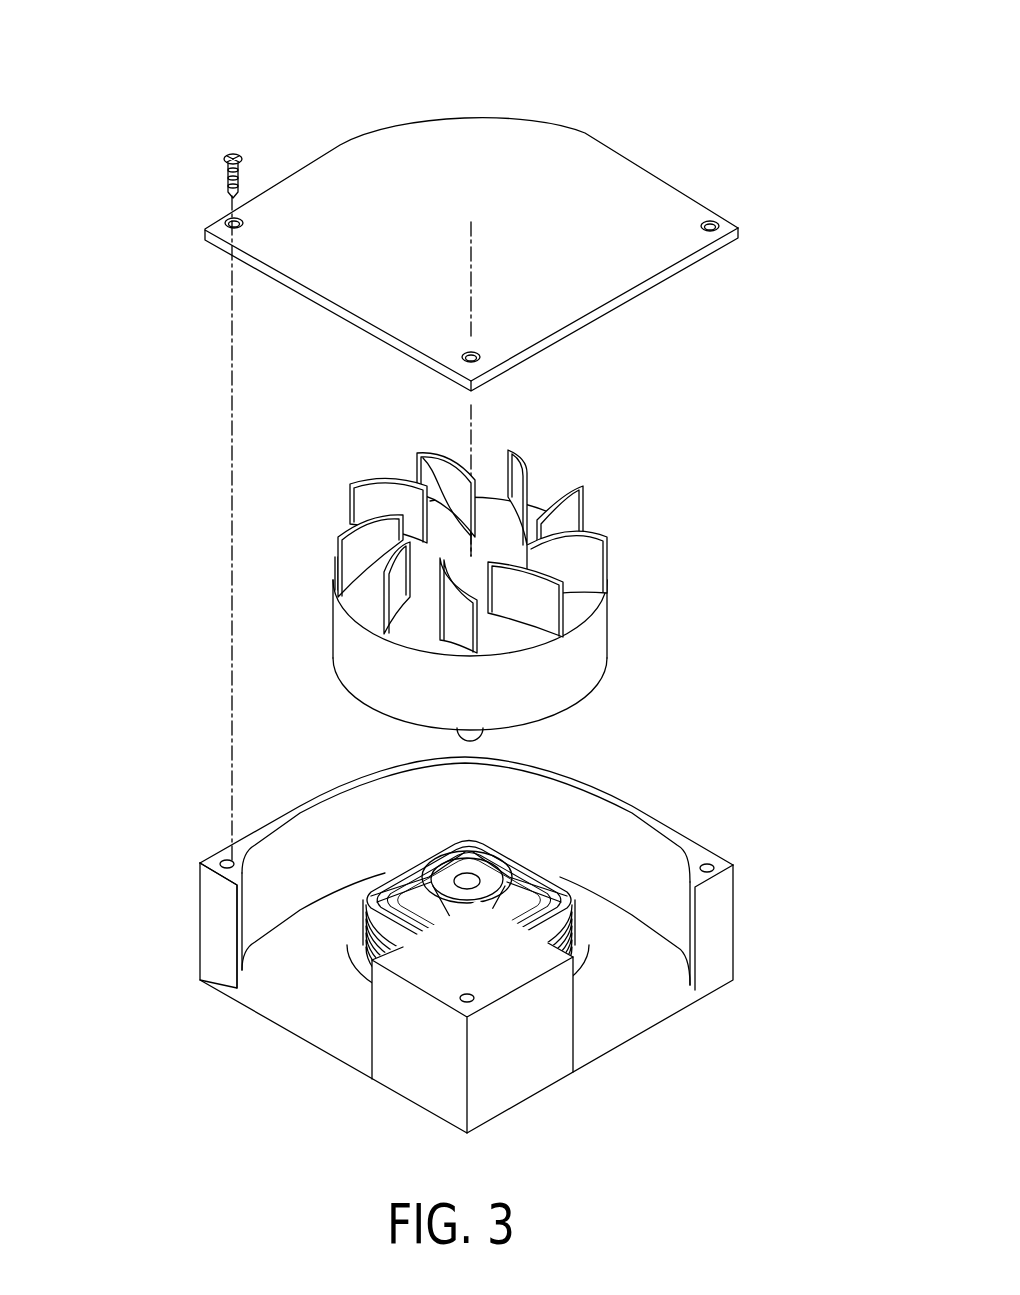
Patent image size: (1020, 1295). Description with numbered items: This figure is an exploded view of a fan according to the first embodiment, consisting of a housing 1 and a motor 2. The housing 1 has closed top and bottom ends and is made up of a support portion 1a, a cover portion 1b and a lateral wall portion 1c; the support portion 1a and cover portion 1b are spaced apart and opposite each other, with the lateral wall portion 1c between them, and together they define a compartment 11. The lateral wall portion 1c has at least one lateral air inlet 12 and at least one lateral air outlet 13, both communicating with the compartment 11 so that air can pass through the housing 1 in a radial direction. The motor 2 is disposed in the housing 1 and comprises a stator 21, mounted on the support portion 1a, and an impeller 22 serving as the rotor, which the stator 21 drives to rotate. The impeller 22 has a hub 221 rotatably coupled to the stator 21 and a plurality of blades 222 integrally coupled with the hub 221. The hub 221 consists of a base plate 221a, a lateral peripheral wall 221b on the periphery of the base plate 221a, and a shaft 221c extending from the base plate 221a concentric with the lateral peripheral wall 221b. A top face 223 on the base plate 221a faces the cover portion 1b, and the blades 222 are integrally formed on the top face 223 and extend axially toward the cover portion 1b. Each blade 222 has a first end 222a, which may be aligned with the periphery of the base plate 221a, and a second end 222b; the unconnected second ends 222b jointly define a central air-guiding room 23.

The housing 1 is at (234, 118).
The support portion 1a is at (268, 997).
The cover portion 1b is at (320, 172).
The lateral wall portion 1c is at (215, 903).
The compartment 11 is at (343, 822).
The lateral air inlet 12 is at (658, 1017).
The lateral air outlet 13 is at (313, 1028).
The motor 2 is at (634, 458).
The stator 21 is at (540, 852).
The impeller 22 is at (140, 530).
The hub 221 is at (355, 650).
The base plate 221a is at (577, 608).
The lateral peripheral wall 221b is at (587, 648).
The shaft 221c is at (478, 742).
The blades 222 is at (338, 535).
The first end 222a is at (352, 487).
The second end 222b is at (437, 487).
The top face 223 is at (358, 600).
The air-guiding room 23 is at (503, 536).